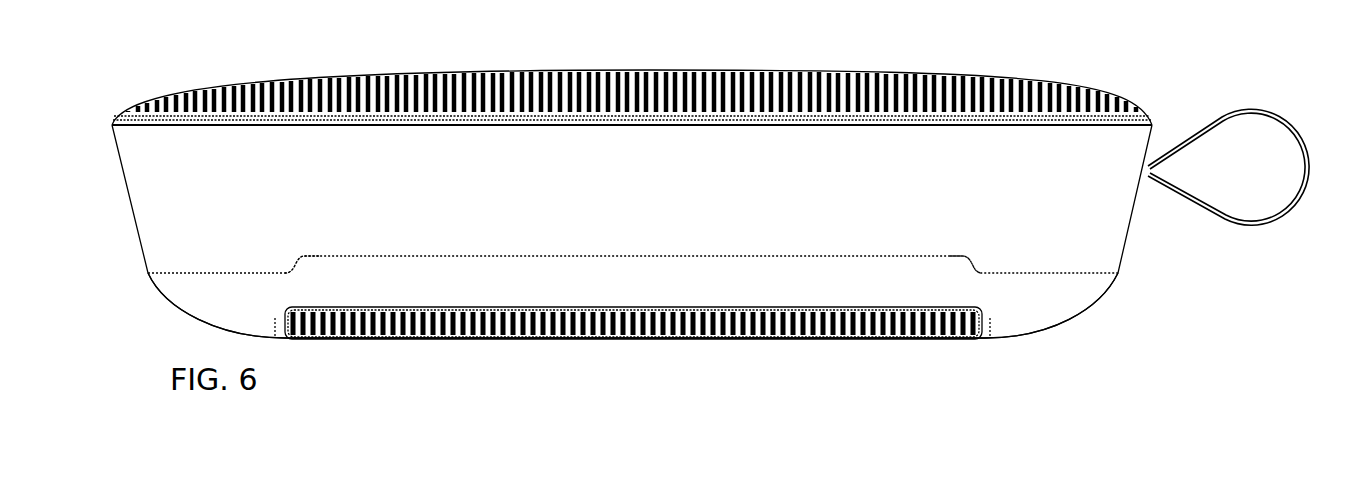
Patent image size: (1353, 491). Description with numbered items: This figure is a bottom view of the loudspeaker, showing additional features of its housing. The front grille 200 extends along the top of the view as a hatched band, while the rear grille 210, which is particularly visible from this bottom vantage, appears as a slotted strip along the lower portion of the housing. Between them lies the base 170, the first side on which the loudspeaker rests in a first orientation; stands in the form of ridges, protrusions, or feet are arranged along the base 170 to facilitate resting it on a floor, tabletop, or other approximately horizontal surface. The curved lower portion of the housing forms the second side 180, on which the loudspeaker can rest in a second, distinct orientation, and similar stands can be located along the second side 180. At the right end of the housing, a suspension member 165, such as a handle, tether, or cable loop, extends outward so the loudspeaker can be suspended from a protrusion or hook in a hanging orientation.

The front grille 200 is at (1119, 81).
The base 170 is at (665, 200).
The rear grille 210 is at (710, 342).
The second side 180 is at (1035, 330).
The suspension member 165 is at (1239, 106).